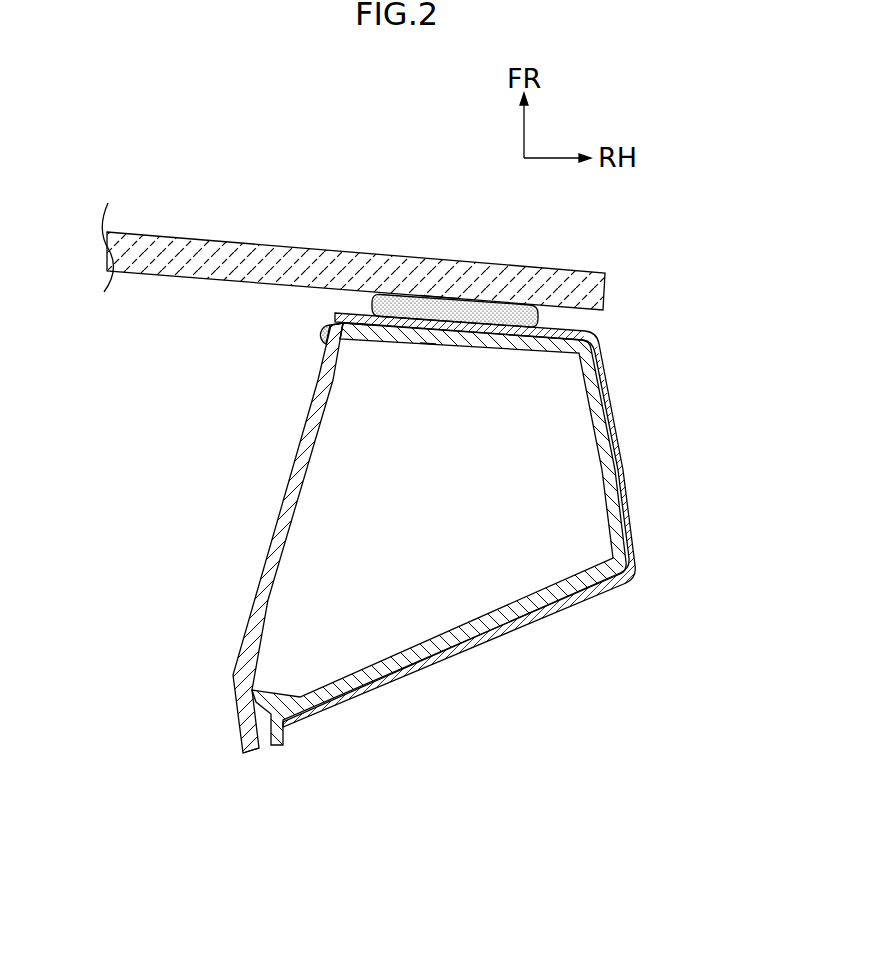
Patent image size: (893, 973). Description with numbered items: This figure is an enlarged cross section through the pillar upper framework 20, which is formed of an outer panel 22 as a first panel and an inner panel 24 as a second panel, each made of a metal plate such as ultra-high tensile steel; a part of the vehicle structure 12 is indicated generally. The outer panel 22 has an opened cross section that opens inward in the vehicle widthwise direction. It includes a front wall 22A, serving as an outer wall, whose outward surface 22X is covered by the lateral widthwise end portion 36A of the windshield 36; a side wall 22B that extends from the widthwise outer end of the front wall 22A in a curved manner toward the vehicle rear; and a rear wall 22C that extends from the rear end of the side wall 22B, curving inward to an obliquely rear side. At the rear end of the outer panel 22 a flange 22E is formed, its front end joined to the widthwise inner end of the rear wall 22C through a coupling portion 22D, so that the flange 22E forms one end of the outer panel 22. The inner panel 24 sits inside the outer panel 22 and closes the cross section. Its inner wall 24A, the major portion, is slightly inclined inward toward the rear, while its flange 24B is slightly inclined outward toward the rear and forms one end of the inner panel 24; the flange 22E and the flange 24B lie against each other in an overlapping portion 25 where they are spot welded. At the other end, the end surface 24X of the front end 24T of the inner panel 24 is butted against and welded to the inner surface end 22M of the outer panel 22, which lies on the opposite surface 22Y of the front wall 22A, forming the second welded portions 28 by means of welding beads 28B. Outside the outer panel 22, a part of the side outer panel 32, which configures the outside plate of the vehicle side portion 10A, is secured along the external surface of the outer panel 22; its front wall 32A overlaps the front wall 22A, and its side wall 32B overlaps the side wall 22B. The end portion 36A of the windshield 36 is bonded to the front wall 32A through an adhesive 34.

The vehicle side portion 10A is at (500, 728).
The vehicle structure 12 is at (152, 573).
The pillar upper framework 20 is at (212, 500).
The outer panel 22 is at (475, 481).
The front wall 22A is at (478, 348).
The side wall 22B is at (600, 474).
The rear wall 22C is at (458, 628).
The coupling portion 22D is at (267, 690).
The flange 22E is at (283, 730).
The inner surface end 22M is at (341, 344).
The outward surface 22X is at (357, 313).
The opposite surface 22Y is at (427, 344).
The inner panel 24 is at (242, 547).
The inner wall 24A is at (262, 578).
The flange 24B is at (235, 712).
The front end 24T is at (327, 345).
The end surface 24X is at (345, 321).
The overlapping portion 25 is at (238, 742).
The second welded portions 28 is at (260, 333).
The welding beads 28B is at (314, 333).
The side outer panel 32 is at (512, 516).
The front wall 32A is at (556, 322).
The side wall 32B is at (628, 492).
The adhesive 34 is at (497, 301).
The windshield 36 is at (178, 238).
The end portion 36A is at (440, 280).